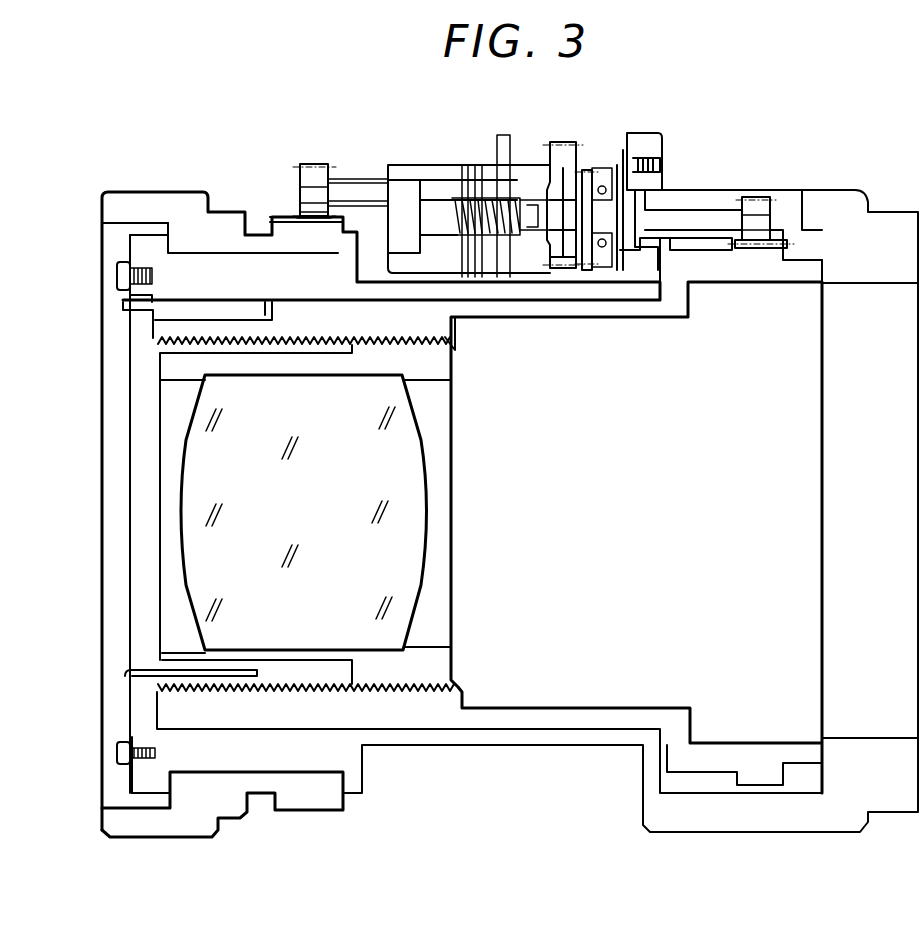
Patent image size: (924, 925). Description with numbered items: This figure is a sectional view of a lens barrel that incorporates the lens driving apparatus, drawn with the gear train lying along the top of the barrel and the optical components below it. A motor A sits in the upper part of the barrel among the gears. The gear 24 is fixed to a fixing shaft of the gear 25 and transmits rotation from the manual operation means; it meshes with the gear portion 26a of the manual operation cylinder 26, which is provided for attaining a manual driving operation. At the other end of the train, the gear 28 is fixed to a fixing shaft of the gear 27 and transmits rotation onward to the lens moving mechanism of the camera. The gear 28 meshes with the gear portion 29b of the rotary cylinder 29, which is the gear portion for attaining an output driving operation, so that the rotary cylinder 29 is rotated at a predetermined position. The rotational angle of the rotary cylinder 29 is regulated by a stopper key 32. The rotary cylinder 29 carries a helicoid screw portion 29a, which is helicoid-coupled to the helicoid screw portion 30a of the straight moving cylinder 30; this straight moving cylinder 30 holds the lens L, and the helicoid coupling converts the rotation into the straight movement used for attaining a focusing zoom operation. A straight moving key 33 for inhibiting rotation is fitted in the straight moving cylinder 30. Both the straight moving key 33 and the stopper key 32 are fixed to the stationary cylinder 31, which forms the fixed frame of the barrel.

The gear 24 is at (308, 178).
The gear 25 is at (560, 153).
The manual operation cylinder 26 is at (170, 202).
The gear portion 26a is at (278, 217).
The gear 27 is at (590, 187).
The gear 28 is at (752, 208).
The rotary cylinder 29 is at (722, 268).
The helicoid screw portion 29a is at (157, 340).
The gear portion 29b is at (782, 230).
The straight moving cylinder 30 is at (425, 363).
The helicoid screw portion 30a is at (449, 351).
The stationary cylinder 31 is at (138, 246).
The stopper key 32 is at (126, 308).
The straight moving key 33 is at (130, 674).
The motor A is at (407, 165).
The lens L is at (400, 446).